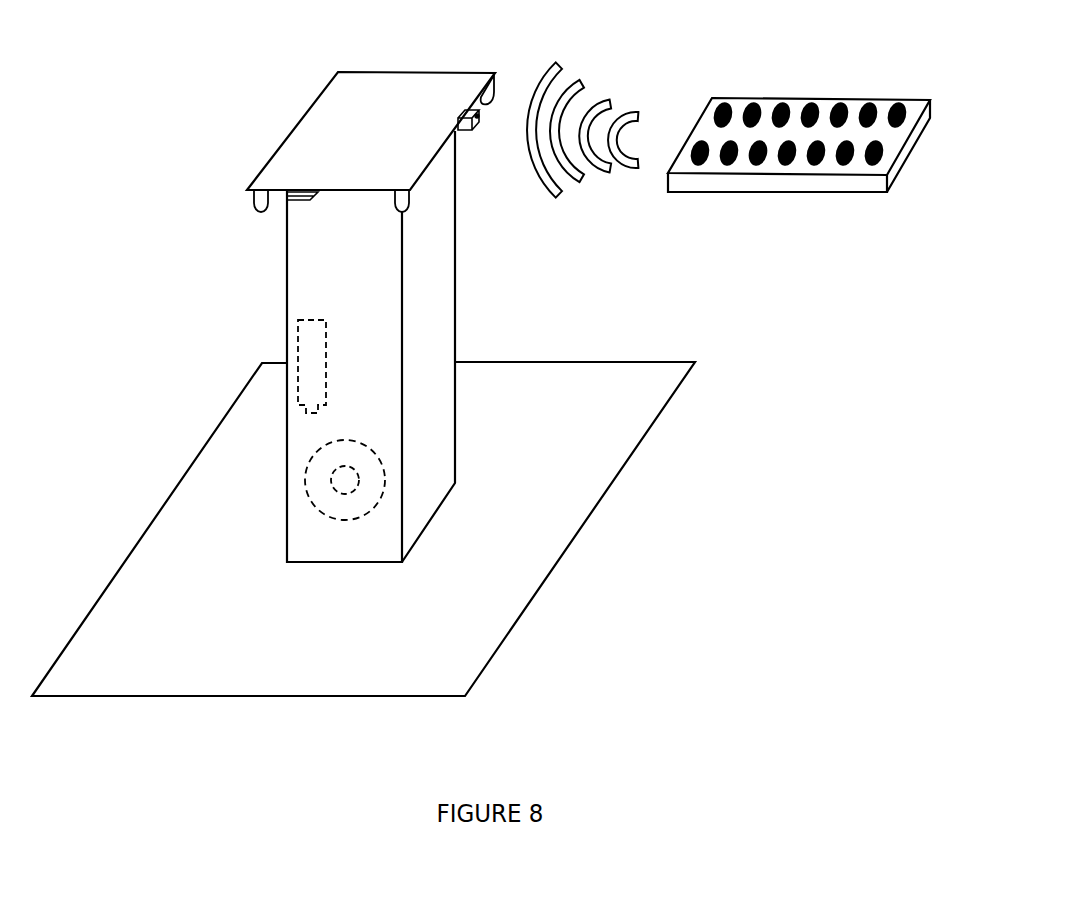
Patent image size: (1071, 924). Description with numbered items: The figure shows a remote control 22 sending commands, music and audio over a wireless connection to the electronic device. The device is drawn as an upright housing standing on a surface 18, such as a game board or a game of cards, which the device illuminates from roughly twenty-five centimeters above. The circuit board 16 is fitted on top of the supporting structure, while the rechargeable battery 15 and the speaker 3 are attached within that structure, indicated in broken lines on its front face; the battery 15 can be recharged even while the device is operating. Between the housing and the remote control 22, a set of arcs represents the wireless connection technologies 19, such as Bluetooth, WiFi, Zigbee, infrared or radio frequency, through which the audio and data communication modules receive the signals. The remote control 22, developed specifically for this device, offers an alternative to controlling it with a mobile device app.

The speaker 3 is at (320, 478).
The rechargeable battery 15 is at (317, 343).
The circuit board 16 is at (337, 103).
The surface 18 is at (555, 528).
The wireless connection technologies 19 is at (598, 92).
The remote control 22 is at (852, 103).